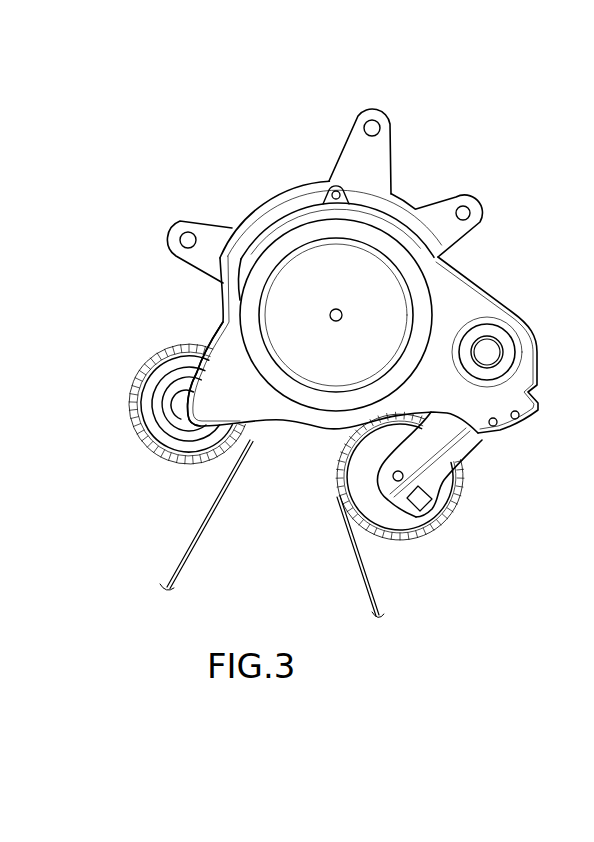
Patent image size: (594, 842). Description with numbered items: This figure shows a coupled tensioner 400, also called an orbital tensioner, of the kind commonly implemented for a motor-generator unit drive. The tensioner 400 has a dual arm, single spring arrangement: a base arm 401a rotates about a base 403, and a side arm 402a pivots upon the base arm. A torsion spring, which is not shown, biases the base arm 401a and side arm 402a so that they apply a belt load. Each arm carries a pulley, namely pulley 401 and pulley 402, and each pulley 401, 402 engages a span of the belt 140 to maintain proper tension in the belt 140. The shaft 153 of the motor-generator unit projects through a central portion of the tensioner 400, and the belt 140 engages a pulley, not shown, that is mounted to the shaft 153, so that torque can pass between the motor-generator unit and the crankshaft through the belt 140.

The coupled tensioner 400 is at (424, 158).
The base 403 is at (283, 187).
The shaft 153 is at (342, 311).
The base arm 401a is at (226, 300).
The pulley 401 is at (170, 347).
The side arm 402a is at (470, 455).
The pulley 402 is at (387, 540).
The belt 140 is at (197, 527).